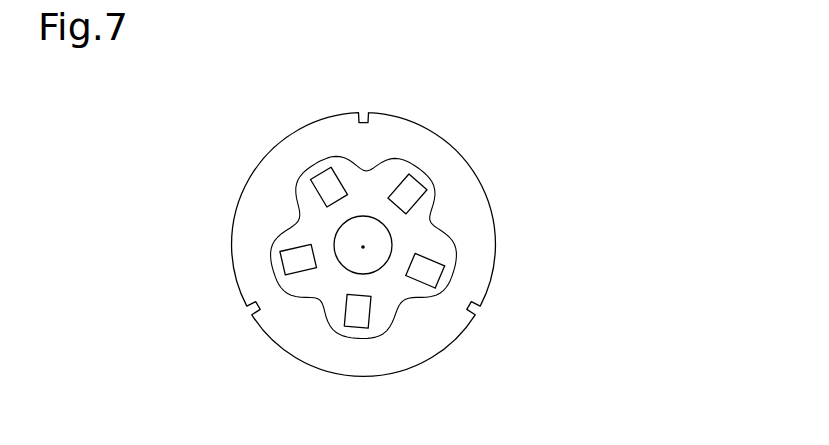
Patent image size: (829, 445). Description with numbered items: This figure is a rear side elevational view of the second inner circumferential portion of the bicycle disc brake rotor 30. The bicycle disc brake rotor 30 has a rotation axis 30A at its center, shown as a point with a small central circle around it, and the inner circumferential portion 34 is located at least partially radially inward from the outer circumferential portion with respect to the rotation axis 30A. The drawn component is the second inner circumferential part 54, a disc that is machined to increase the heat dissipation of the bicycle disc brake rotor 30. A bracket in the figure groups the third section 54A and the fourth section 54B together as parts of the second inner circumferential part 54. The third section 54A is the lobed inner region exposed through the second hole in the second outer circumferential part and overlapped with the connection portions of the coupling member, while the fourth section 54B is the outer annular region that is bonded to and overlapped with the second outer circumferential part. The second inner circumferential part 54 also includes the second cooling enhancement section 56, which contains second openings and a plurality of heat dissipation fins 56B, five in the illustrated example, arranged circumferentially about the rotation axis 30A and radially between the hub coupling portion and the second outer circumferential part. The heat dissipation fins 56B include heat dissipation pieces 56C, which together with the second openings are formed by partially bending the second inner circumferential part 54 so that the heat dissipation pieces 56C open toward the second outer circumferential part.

The bicycle disc brake rotor 30 is at (663, 104).
The rotation axis 30A is at (363, 246).
The inner circumferential portion 34 is at (614, 190).
The second inner circumferential part 54 is at (564, 182).
The third section 54A is at (437, 249).
The fourth section 54B is at (461, 206).
The second cooling enhancement section 56 is at (457, 272).
The heat dissipation fins 56B is at (456, 285).
The heat dissipation pieces 56C is at (423, 287).